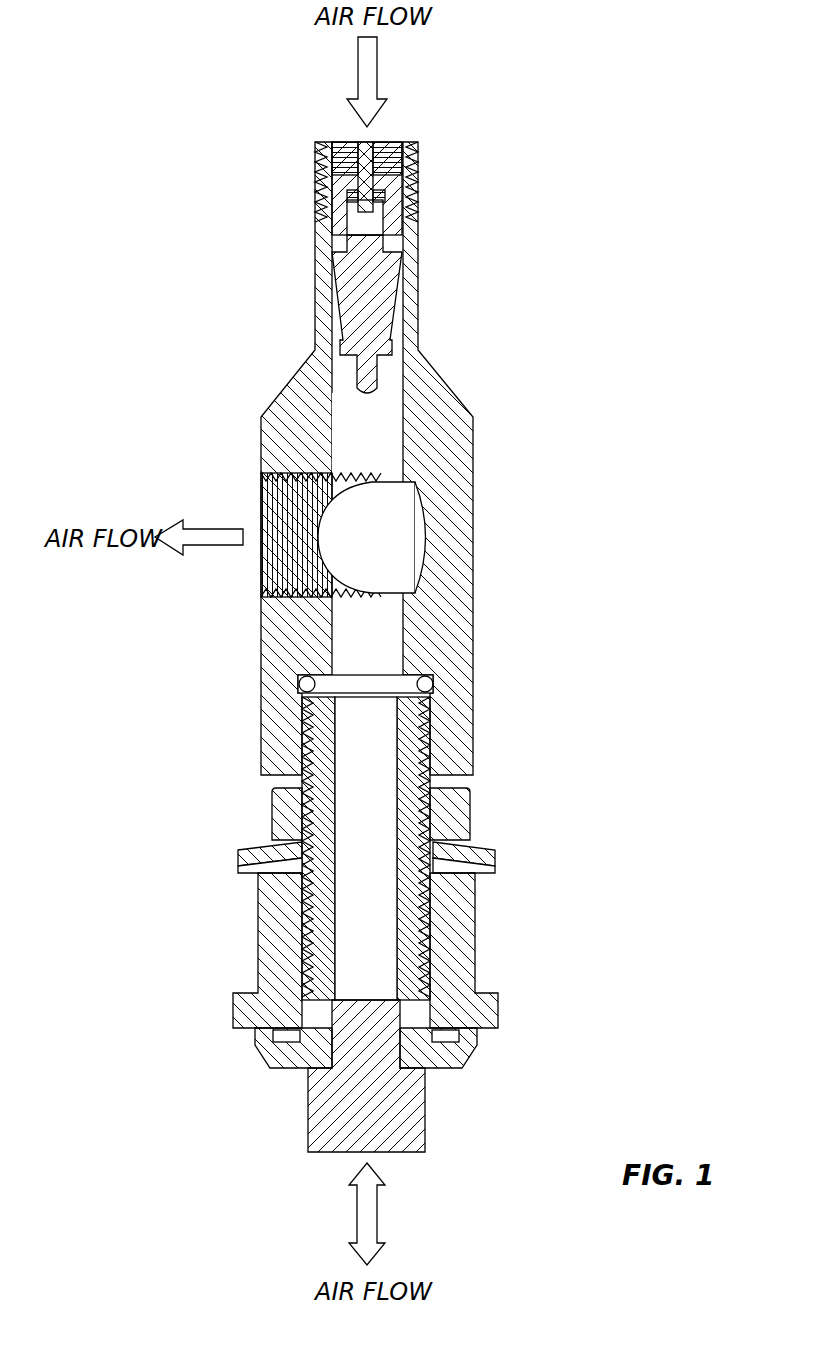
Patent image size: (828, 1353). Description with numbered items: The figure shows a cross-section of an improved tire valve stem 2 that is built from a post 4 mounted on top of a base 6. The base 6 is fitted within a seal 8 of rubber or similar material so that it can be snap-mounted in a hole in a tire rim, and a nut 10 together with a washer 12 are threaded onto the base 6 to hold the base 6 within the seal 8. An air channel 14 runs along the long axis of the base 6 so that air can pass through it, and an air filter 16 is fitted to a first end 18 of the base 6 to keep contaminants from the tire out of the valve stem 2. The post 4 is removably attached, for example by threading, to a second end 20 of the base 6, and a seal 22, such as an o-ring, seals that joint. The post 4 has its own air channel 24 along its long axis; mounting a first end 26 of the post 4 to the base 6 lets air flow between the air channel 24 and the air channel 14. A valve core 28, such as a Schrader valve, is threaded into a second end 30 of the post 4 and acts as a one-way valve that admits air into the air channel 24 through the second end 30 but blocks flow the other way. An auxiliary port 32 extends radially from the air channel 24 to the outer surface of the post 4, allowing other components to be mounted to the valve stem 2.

The tire valve stem 2 is at (592, 316).
The post 4 is at (450, 383).
The base 6 is at (263, 1060).
The seal 8 is at (475, 945).
The nut 10 is at (470, 797).
The washer 12 is at (495, 858).
The air channel 14 is at (362, 875).
The air filter 16 is at (425, 1110).
The first end 18 is at (470, 1058).
The second end 20 is at (430, 738).
The seal 22 is at (422, 686).
The air channel 24 is at (365, 432).
The first end 26 is at (262, 735).
The valve core 28 is at (365, 292).
The second end 30 is at (318, 178).
The auxiliary port 32 is at (262, 568).